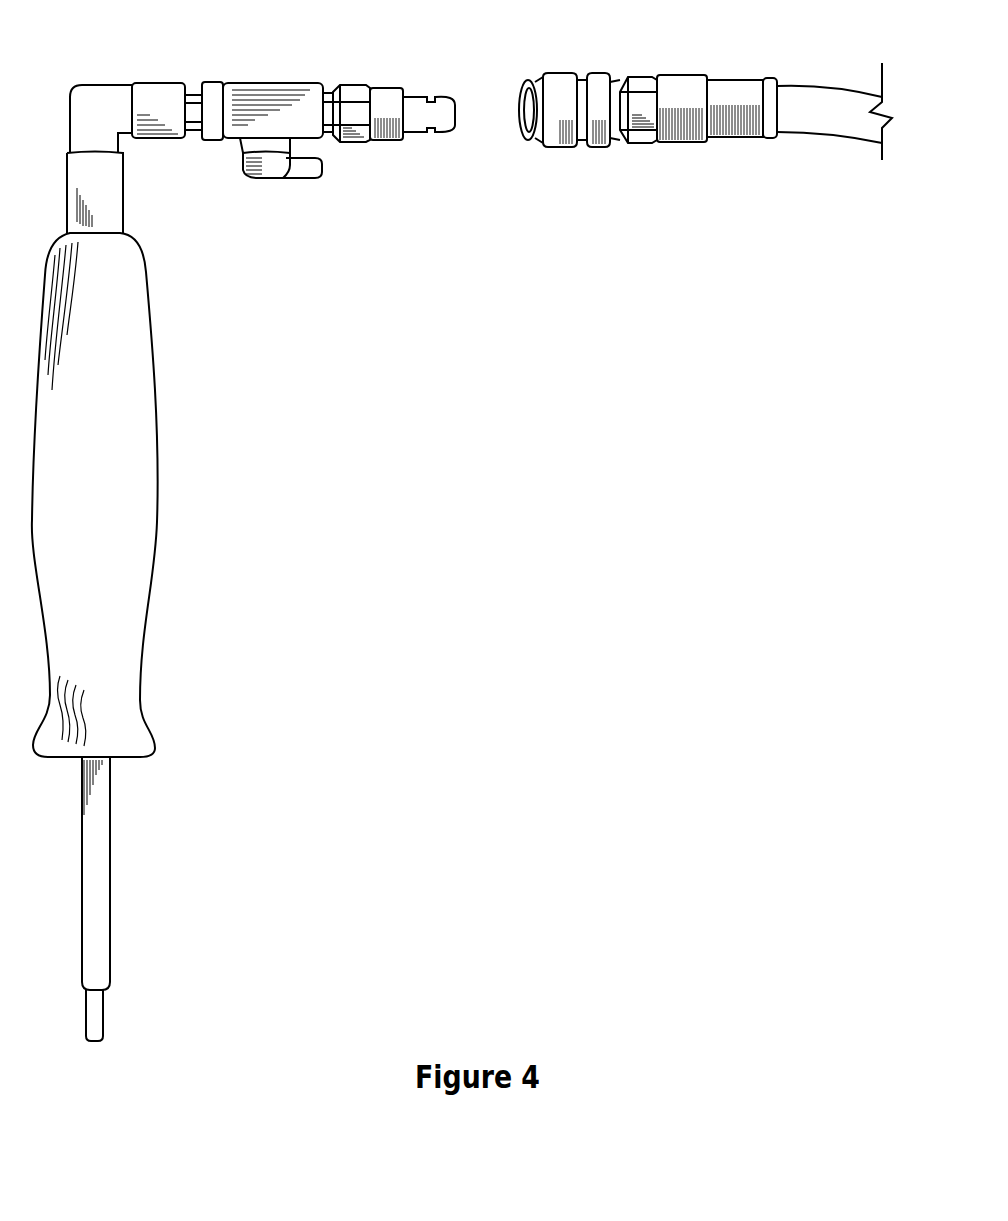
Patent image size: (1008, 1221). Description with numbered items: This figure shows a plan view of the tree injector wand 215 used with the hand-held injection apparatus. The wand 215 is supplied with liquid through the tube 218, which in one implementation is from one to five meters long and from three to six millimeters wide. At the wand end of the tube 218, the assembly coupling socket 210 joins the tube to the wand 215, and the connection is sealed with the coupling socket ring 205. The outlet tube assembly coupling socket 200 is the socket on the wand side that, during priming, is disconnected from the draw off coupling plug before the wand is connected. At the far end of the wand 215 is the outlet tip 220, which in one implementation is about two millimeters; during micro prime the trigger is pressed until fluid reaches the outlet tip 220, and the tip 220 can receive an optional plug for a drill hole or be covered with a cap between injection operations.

The outlet tube assembly coupling socket 200 is at (455, 127).
The coupling socket ring 205 is at (578, 137).
The assembly coupling socket 210 is at (627, 82).
The tree injector wand 215 is at (152, 465).
The tube 218 is at (808, 95).
The outlet tip 220 is at (103, 1027).